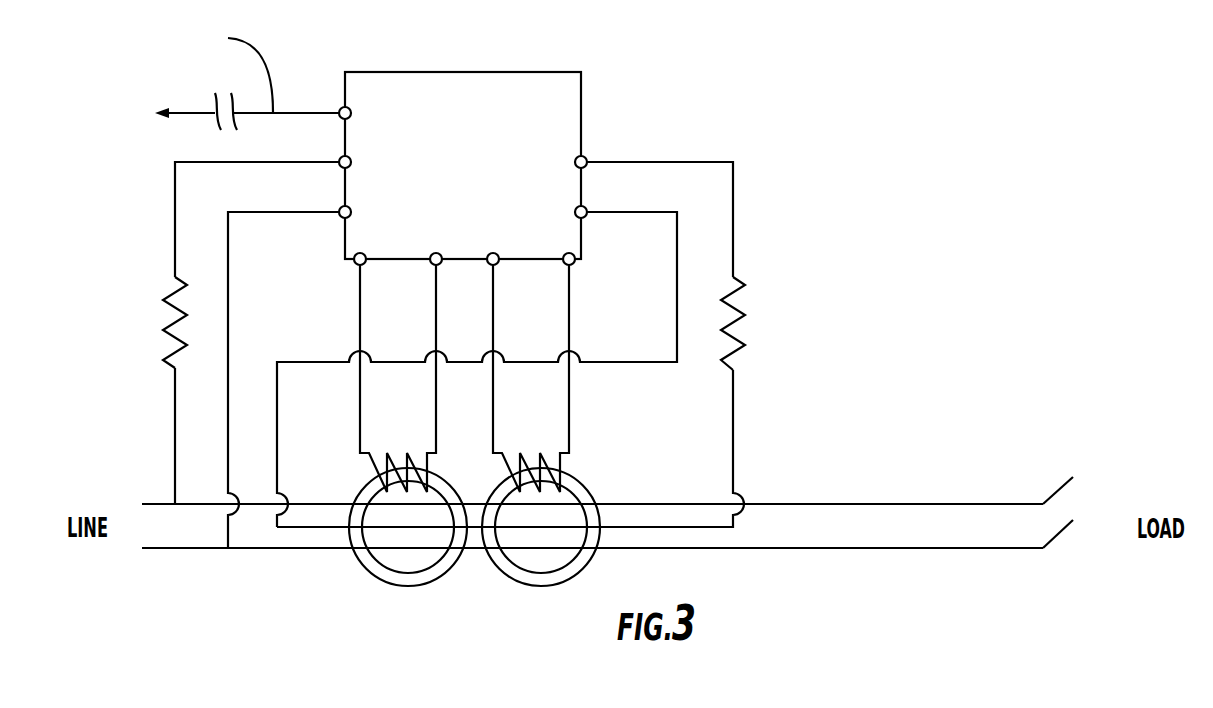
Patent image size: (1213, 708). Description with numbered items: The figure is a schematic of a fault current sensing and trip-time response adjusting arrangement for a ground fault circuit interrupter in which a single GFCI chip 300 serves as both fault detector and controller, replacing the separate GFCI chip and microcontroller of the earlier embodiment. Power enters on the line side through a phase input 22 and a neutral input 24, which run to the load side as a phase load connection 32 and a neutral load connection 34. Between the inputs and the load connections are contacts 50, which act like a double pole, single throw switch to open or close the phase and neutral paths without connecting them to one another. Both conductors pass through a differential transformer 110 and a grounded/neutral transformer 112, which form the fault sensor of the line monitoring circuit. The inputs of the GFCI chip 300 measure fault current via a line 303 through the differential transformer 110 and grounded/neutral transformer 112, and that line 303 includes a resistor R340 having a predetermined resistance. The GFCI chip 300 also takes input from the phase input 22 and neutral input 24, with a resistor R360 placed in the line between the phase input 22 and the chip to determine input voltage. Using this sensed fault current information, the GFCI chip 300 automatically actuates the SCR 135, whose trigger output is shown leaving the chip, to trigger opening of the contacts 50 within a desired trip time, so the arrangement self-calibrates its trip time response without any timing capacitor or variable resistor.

The GFCI chip 300 is at (483, 196).
The SCR 135 is at (228, 80).
The resistor R360 is at (162, 318).
The resistor R340 is at (750, 322).
The line 303 is at (742, 422).
The phase input 22 is at (580, 505).
The neutral input 24 is at (580, 548).
The differential transformer 110 is at (408, 593).
The grounded/neutral transformer 112 is at (541, 593).
The phase load connection 32 is at (1065, 504).
The neutral load connection 34 is at (1065, 548).
The contacts 50 is at (1054, 568).